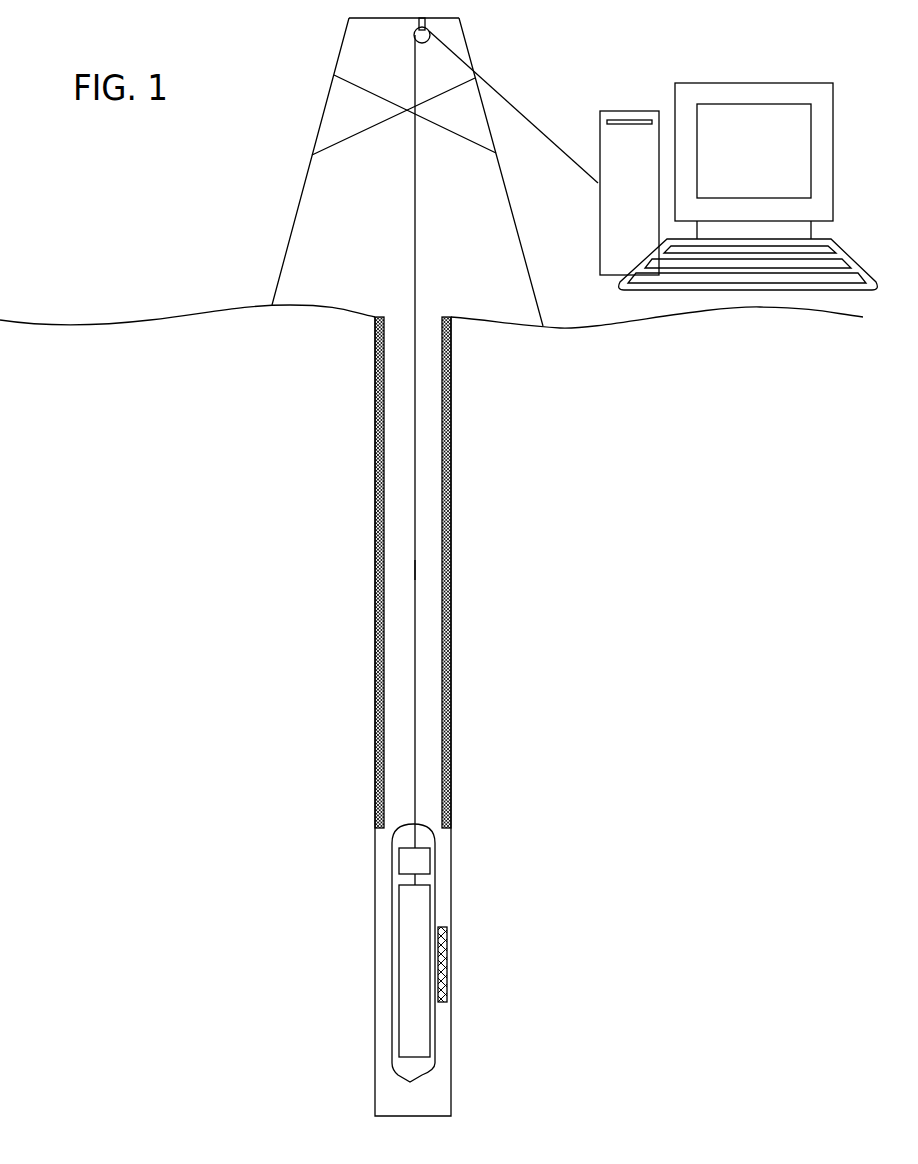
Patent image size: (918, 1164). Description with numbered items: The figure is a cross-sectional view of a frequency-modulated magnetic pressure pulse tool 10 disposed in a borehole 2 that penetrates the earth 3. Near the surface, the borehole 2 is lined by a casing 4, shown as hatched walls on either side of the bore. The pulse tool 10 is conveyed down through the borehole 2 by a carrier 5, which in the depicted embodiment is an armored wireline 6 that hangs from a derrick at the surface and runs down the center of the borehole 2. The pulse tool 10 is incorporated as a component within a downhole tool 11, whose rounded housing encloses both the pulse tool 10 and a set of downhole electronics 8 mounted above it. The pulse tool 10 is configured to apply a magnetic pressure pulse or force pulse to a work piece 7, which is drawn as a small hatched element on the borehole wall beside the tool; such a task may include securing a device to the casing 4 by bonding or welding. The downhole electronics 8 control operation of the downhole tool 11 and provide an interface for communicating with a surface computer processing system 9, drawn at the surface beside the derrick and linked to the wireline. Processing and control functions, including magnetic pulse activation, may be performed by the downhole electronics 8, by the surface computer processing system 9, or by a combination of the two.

The borehole 2 is at (405, 440).
The earth 3 is at (80, 366).
The casing 4 is at (380, 496).
The carrier 5 is at (415, 573).
The armored wireline 6 is at (417, 663).
The work piece 7 is at (445, 955).
The downhole electronics 8 is at (405, 860).
The surface computer processing system 9 is at (610, 111).
The frequency-modulated magnetic pressure pulse tool 10 is at (405, 988).
The downhole tool 11 is at (393, 906).